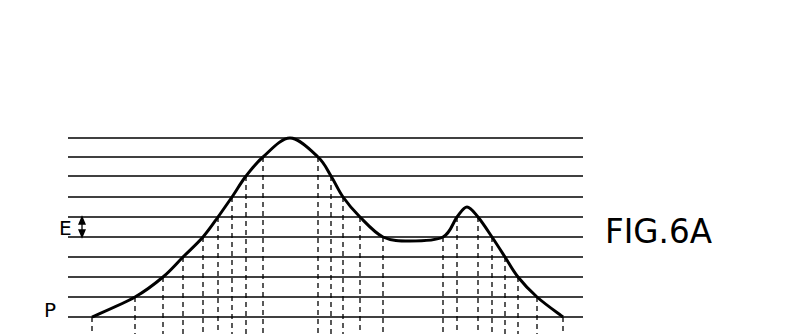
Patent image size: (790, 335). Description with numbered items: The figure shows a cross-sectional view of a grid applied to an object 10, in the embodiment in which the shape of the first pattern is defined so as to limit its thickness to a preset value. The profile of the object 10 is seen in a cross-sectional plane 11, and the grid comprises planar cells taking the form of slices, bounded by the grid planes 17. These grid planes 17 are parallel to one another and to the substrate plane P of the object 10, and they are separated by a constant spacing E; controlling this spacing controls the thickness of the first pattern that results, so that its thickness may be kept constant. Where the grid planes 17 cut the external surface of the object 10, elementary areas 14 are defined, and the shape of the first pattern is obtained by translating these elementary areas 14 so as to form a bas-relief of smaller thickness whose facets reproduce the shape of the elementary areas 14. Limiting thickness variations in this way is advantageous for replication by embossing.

The object 10 is at (108, 122).
The cross-sectional plane 11 is at (331, 163).
The elementary area 14 is at (259, 150).
The grid plane 17 is at (523, 138).